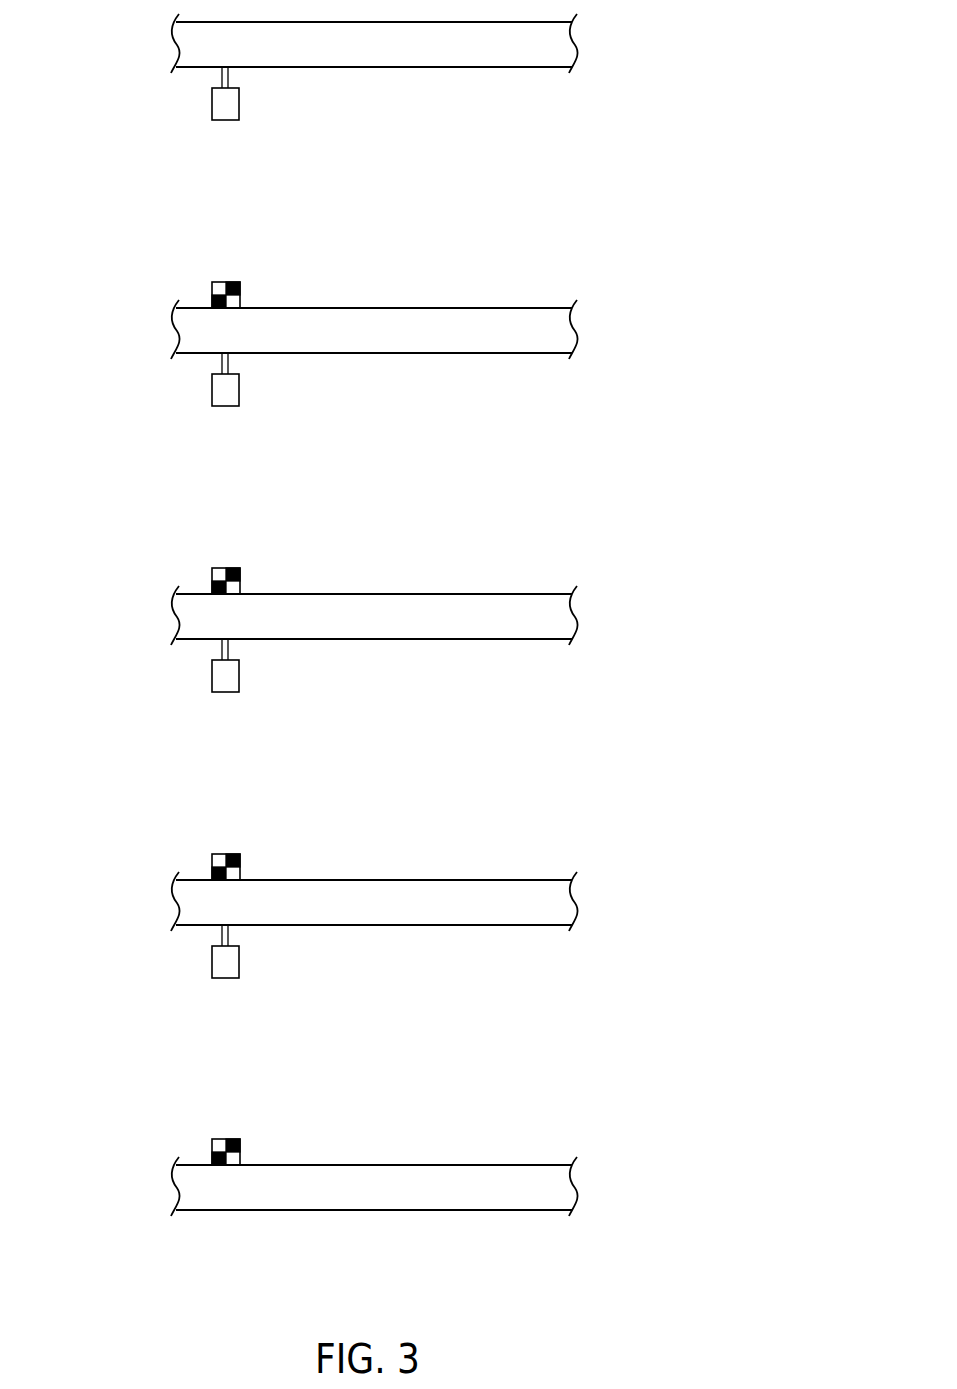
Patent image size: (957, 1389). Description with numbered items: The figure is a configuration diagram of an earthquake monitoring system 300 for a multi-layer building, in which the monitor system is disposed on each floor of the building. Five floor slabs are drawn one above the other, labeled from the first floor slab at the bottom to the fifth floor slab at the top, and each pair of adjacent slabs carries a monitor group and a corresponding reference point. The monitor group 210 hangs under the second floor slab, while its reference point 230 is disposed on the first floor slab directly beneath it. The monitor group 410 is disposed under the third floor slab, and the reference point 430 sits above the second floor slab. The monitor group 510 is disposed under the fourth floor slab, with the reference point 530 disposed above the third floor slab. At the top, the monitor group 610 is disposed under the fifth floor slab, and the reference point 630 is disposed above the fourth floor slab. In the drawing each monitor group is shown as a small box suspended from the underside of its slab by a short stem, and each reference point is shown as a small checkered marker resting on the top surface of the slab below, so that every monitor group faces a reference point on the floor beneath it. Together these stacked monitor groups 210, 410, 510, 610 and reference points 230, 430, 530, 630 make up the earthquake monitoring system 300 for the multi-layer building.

The earthquake monitoring system 300 is at (90, 29).
The monitor group 610 is at (218, 106).
The reference point 630 is at (214, 287).
The monitor group 510 is at (218, 392).
The reference point 530 is at (214, 573).
The monitor group 410 is at (218, 678).
The reference point 430 is at (214, 859).
The monitor group 210 is at (218, 964).
The reference point 230 is at (214, 1144).